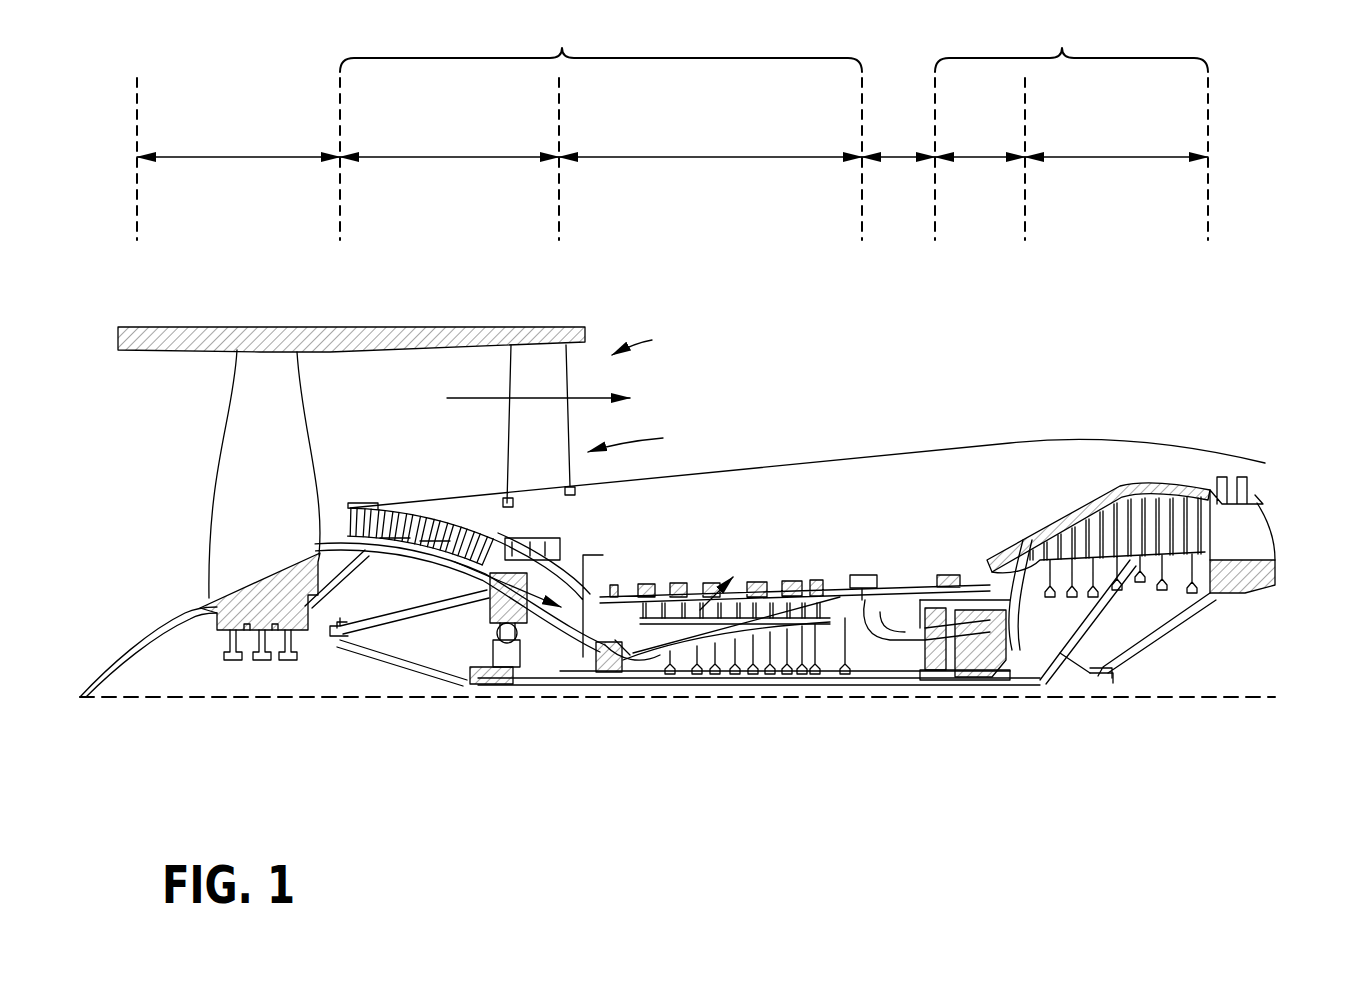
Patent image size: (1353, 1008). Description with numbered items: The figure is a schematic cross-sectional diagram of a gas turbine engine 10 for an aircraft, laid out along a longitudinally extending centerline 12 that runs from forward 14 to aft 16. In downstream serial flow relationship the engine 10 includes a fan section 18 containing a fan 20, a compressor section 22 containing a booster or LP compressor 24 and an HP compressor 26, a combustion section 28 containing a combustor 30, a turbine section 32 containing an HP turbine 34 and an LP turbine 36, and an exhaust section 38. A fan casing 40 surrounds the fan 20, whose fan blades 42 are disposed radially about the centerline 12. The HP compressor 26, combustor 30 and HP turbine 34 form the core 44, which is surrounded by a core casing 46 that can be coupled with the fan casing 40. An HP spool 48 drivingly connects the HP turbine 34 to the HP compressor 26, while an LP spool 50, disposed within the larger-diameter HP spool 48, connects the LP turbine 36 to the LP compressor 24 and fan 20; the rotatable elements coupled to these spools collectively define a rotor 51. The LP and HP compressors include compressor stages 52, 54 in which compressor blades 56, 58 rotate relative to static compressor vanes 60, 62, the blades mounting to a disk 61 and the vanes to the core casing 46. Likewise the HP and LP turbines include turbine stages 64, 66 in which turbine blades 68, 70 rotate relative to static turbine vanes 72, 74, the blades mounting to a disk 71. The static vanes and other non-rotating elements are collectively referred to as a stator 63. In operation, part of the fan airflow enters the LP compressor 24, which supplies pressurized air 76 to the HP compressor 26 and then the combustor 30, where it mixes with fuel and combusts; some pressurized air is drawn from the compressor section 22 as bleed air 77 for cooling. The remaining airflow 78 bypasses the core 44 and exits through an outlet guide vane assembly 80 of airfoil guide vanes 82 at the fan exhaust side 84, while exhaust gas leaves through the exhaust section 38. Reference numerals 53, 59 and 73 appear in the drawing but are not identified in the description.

The engine 10 is at (893, 320).
The centerline 12 is at (238, 699).
The forward 14 is at (86, 461).
The aft 16 is at (1296, 545).
The fan section 18 is at (238, 144).
The fan 20 is at (175, 537).
The compressor section 22 is at (601, 45).
The low pressure compressor 24 is at (449, 144).
The high pressure compressor 26 is at (710, 144).
The combustion section 28 is at (898, 137).
The combustor 30 is at (905, 600).
The turbine section 32 is at (1071, 45).
The HP turbine 34 is at (980, 144).
The LP turbine 36 is at (1116, 144).
The exhaust section 38 is at (1283, 497).
The fan casing 40 is at (262, 347).
The fan blades 42 is at (300, 405).
The core 44 is at (843, 498).
The core casing 46 is at (1157, 483).
The HP spool 48 is at (875, 655).
The LP spool 50 is at (494, 684).
The rotor 51 is at (437, 564).
The compressor stages 52 is at (405, 449).
The turbine rear frame strut 53 is at (1008, 642).
The compressor stages 54 is at (670, 560).
The compressor blades 56 is at (378, 525).
The compressor blades 58 is at (638, 640).
The compressor shroud 59 is at (380, 550).
The static compressor vanes 60 is at (358, 518).
The disk 61 is at (637, 660).
The static compressor vanes 62 is at (615, 610).
The stator 63 is at (612, 657).
The turbine stages 64 is at (998, 530).
The turbine stages 66 is at (1037, 448).
The turbine blades 68 is at (958, 596).
The turbine blades 70 is at (1045, 565).
The disk 71 is at (957, 662).
The static turbine vanes 72 is at (935, 592).
The turbine frame strut 73 is at (1050, 660).
The static turbine vanes 74 is at (1025, 572).
The pressurized air 76 is at (555, 580).
The bleed air 77 is at (736, 574).
The airflow 78 is at (470, 396).
The outlet guide vane assembly 80 is at (644, 439).
The airfoil guide vanes 82 is at (520, 437).
The fan exhaust side 84 is at (650, 339).